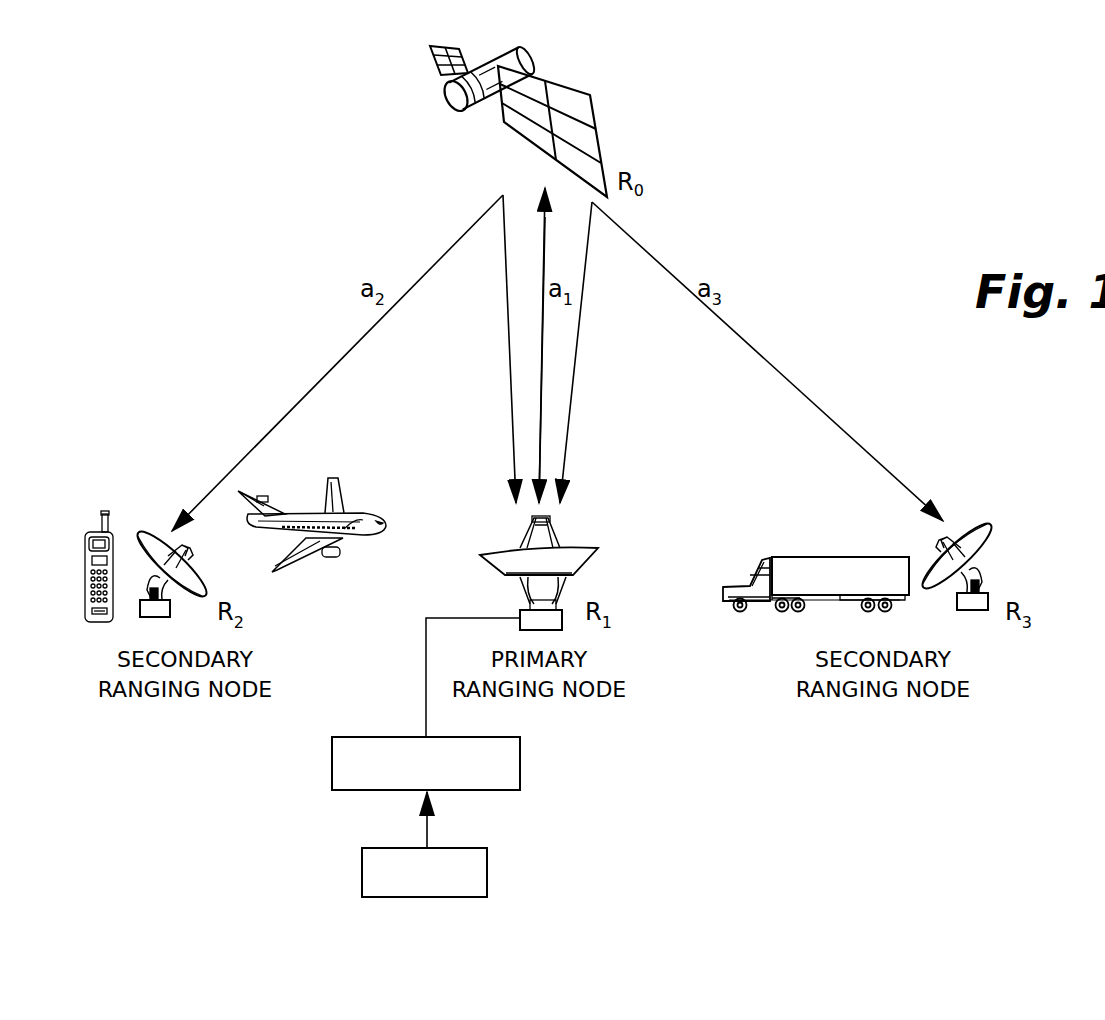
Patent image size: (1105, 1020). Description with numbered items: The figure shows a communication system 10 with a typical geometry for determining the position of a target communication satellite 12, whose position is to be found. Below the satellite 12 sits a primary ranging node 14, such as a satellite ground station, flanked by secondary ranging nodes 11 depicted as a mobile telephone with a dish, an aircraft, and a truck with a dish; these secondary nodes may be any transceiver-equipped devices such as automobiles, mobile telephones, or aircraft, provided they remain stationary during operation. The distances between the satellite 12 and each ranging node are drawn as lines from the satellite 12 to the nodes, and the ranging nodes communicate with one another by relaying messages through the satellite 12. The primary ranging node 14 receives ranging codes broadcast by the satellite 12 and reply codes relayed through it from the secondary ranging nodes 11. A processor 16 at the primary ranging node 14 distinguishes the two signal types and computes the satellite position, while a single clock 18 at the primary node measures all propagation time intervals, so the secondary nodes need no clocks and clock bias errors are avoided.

The communication system 10 is at (805, 188).
The secondary ranging nodes 11 is at (337, 483).
The target communication satellite 12 is at (583, 92).
The primary ranging node 14 is at (662, 510).
The processor 16 is at (520, 763).
The clock 18 is at (487, 875).